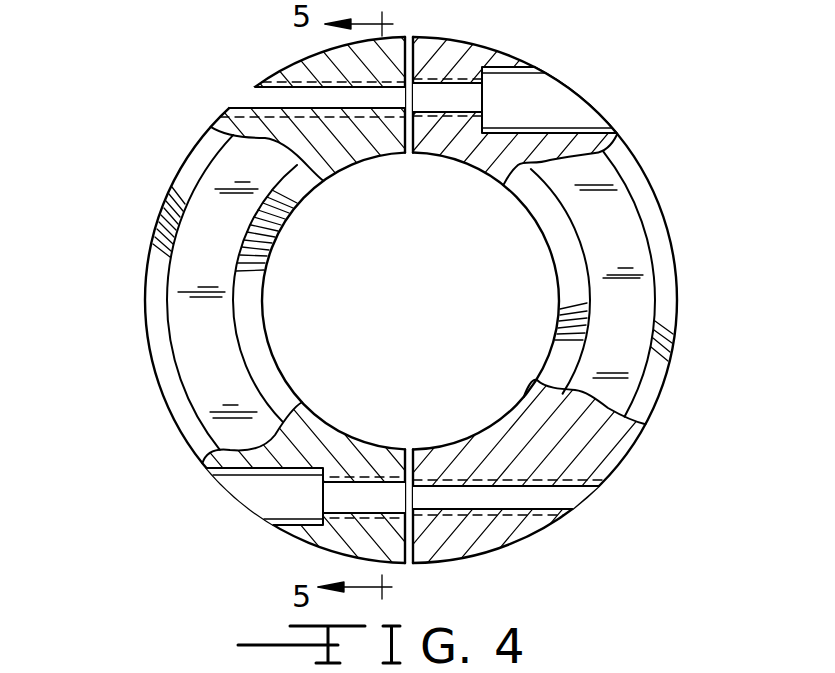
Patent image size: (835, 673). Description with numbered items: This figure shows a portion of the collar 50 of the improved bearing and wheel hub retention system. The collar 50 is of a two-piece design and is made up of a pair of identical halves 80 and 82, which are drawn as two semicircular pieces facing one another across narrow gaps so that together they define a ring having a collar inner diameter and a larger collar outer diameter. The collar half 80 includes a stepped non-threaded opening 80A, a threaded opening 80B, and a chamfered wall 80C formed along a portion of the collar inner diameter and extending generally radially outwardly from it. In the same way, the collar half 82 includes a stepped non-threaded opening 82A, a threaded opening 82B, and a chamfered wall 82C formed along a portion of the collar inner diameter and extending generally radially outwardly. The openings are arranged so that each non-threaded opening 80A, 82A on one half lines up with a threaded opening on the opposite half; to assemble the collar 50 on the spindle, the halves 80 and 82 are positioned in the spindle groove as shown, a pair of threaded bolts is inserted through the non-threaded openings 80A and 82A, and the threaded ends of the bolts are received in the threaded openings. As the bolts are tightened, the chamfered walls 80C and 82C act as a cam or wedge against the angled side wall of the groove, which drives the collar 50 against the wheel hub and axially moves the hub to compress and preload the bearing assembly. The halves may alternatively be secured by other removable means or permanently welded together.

The collar 50 is at (566, 46).
The collar half 80 is at (169, 270).
The stepped non-threaded opening 80A is at (227, 478).
The threaded opening 80B is at (252, 92).
The chamfered wall 80C is at (248, 318).
The collar half 82 is at (637, 212).
The stepped non-threaded opening 82A is at (556, 94).
The threaded opening 82B is at (550, 510).
The chamfered wall 82C is at (577, 297).